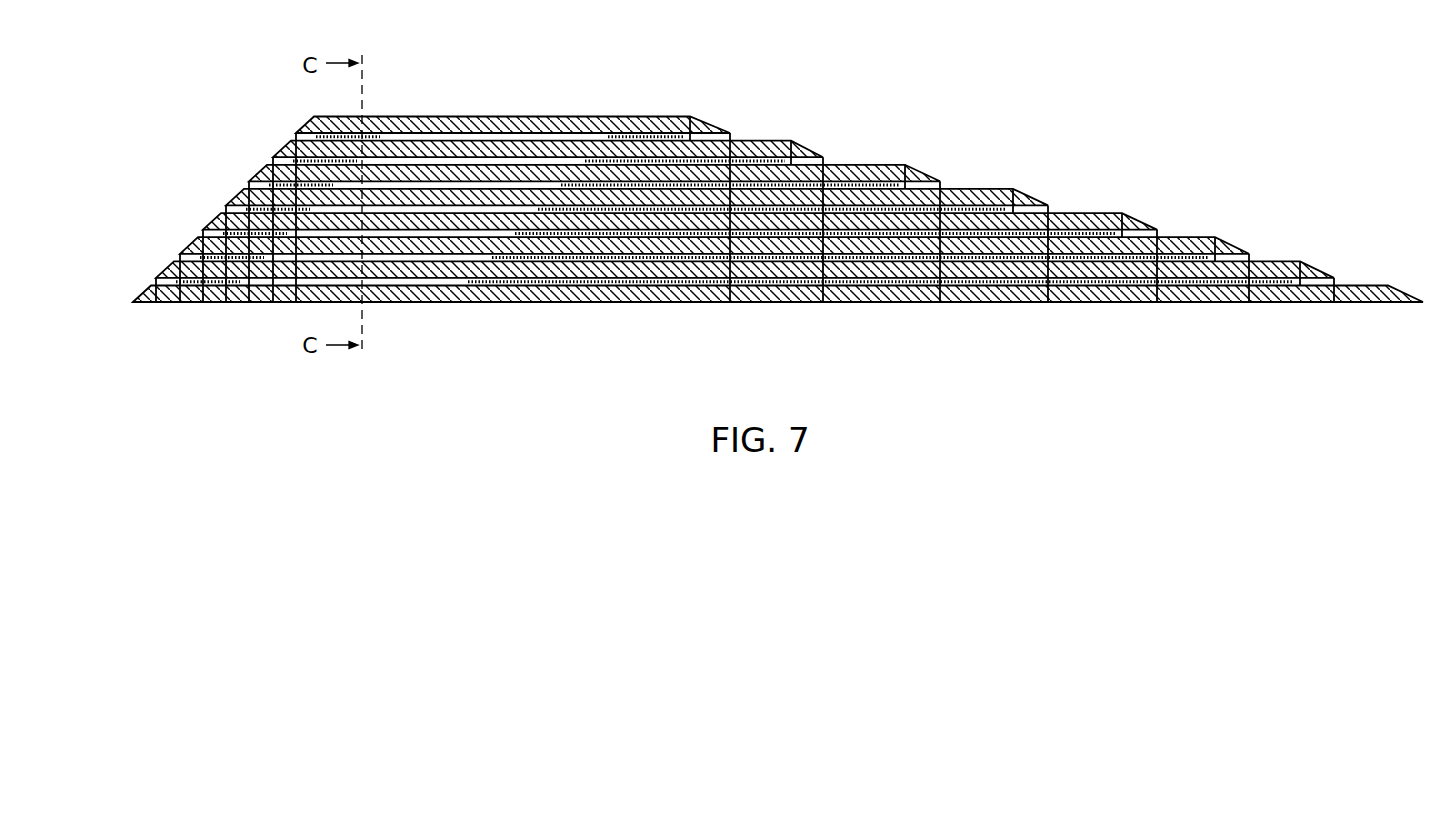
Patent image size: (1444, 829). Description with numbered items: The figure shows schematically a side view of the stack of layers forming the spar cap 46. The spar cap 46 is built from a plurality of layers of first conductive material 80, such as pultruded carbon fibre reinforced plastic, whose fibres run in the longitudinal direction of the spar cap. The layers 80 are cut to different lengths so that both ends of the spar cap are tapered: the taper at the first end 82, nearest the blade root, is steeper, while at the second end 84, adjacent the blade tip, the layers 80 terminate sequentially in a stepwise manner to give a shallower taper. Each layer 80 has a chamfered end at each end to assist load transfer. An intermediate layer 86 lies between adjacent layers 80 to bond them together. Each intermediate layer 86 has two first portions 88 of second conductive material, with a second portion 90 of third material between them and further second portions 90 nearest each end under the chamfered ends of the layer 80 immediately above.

The layer of first conductive material 80 is at (594, 116).
The first end 82 is at (160, 122).
The second end 84 is at (1378, 146).
The spar cap 46 is at (1186, 105).
The intermediate layer 86 is at (292, 134).
The first portion of second conductive material 88 is at (327, 138).
The second portion of third material 90 is at (296, 132).